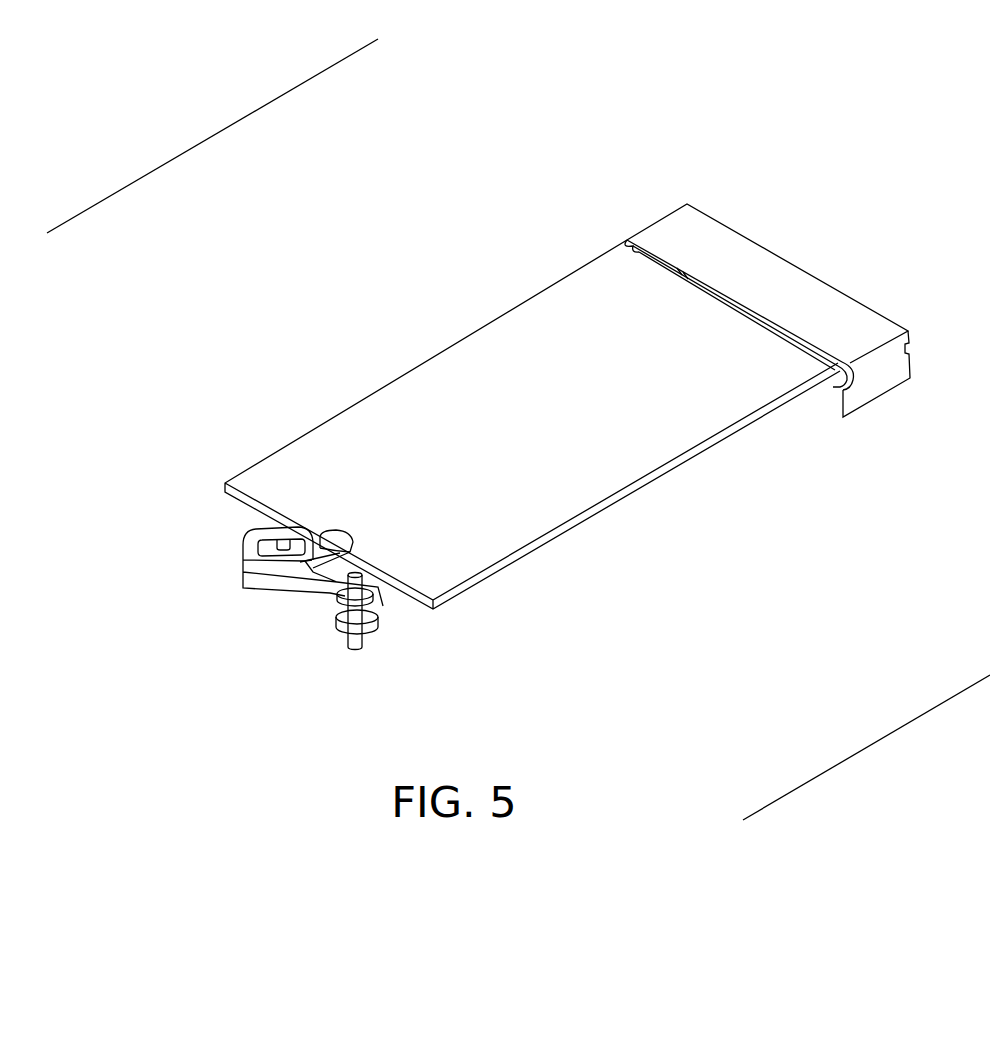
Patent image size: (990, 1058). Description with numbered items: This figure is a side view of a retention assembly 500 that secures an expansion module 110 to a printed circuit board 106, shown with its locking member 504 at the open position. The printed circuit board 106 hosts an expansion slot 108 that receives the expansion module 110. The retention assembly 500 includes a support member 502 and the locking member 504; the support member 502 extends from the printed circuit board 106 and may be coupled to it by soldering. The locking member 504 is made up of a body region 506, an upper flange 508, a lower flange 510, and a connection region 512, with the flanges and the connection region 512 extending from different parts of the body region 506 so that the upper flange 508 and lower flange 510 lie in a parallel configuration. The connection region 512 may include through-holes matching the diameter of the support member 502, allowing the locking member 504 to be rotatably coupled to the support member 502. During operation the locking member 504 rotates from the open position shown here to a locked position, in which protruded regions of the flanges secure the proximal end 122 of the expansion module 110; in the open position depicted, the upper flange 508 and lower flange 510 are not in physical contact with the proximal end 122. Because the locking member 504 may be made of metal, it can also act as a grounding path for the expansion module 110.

The printed circuit board 106 is at (248, 115).
The expansion slot 108 is at (672, 210).
The expansion module 110 is at (488, 327).
The proximal end 122 is at (360, 534).
The retention assembly 500 is at (307, 589).
The support member 502 is at (352, 647).
The locking member 504 is at (289, 579).
The body region 506 is at (320, 598).
The upper flange 508 is at (258, 531).
The lower flange 510 is at (353, 557).
The connection region 512 is at (380, 620).